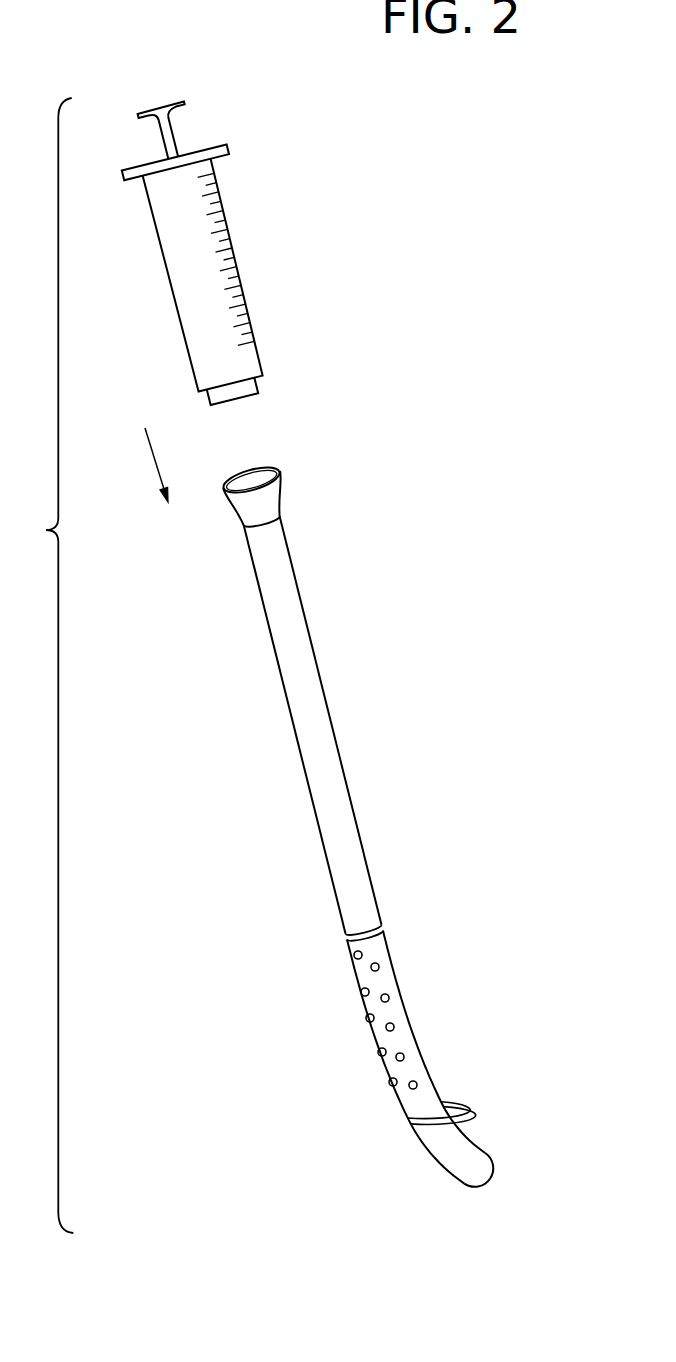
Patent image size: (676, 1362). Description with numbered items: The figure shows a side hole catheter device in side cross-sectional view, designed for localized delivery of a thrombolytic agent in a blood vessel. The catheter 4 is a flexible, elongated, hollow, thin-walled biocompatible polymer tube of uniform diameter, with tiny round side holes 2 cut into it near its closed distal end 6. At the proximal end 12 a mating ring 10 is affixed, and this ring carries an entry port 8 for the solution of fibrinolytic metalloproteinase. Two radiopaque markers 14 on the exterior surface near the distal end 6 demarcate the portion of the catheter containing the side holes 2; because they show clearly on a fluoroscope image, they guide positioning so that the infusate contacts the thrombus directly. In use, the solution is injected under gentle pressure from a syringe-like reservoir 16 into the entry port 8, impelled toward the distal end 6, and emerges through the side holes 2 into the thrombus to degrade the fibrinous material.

The side holes 2 is at (377, 970).
The catheter 4 is at (348, 778).
The distal end 6 is at (508, 1168).
The entry port 8 is at (248, 482).
The mating ring 10 is at (278, 495).
The proximal end 12 is at (292, 473).
The radiopaque markers 14 is at (383, 927).
The syringe-like reservoir 16 is at (228, 233).